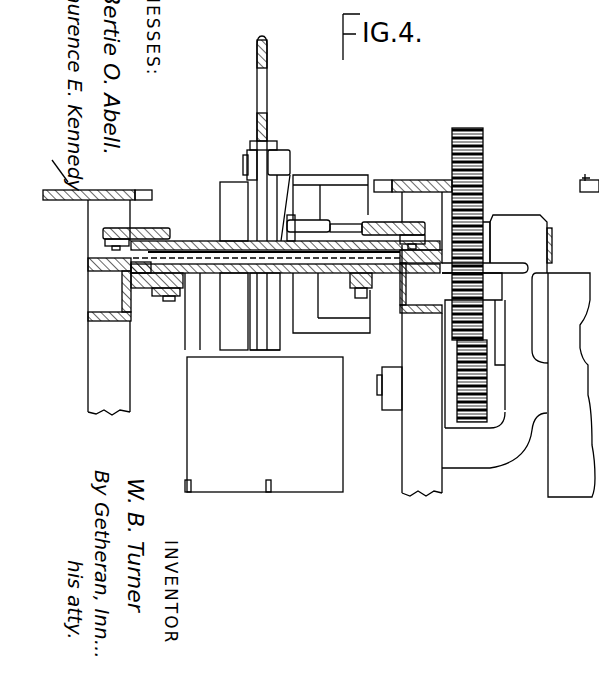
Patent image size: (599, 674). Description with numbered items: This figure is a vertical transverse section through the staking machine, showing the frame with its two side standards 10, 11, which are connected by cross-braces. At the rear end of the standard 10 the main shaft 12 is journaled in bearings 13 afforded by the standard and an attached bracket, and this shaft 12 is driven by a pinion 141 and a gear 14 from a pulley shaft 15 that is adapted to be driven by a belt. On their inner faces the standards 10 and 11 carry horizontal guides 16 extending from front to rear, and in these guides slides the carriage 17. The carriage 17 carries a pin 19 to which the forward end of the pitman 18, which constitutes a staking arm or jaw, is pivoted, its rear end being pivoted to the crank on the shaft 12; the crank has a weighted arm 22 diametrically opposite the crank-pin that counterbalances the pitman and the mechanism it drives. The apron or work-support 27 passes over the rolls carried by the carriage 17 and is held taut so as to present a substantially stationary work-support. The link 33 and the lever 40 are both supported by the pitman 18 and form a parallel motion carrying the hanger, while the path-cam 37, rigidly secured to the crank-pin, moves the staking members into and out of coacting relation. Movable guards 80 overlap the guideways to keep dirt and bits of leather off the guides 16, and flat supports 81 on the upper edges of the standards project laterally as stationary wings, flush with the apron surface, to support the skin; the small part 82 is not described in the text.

The side standard 10 is at (425, 496).
The side standard 11 is at (112, 412).
The main shaft 12 is at (580, 232).
The bearings 13 is at (515, 213).
The gear 14 is at (484, 146).
The pinion 141 is at (476, 425).
The pulley shaft 15 is at (391, 410).
The guides 16 is at (140, 282).
The slide or carriage 17 is at (195, 241).
The pitman 18 is at (268, 352).
The pin 19 is at (202, 273).
The weighted arm 22 is at (340, 170).
The apron or work-support 27 is at (187, 392).
The link 33 is at (257, 134).
The path-cam 37 is at (222, 197).
The lever 40 is at (264, 92).
The movable guards 80 is at (103, 231).
The flat supports 81 is at (148, 190).
The bracket 82 is at (589, 166).